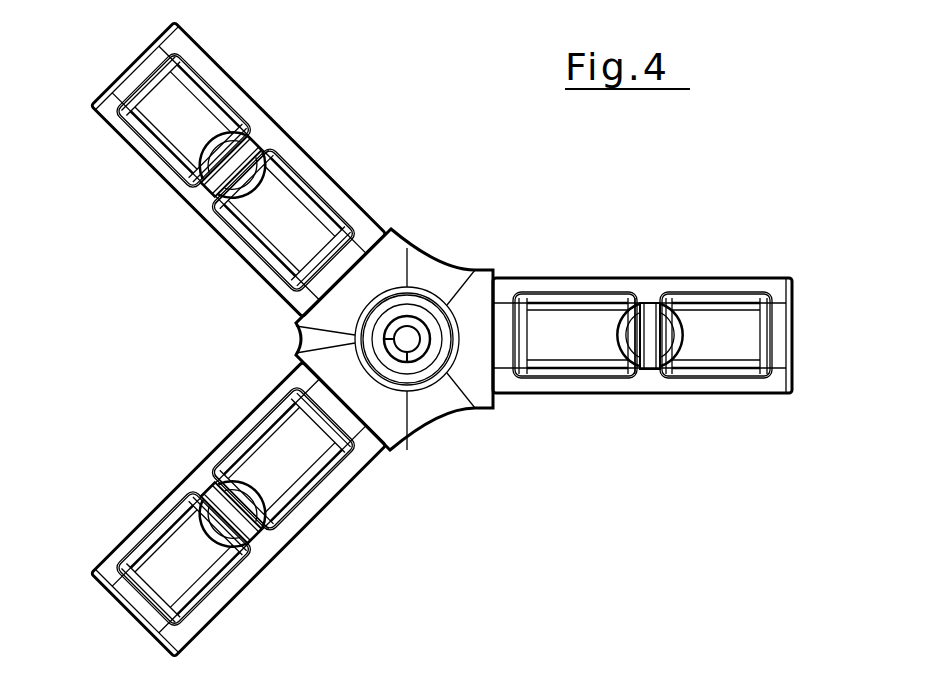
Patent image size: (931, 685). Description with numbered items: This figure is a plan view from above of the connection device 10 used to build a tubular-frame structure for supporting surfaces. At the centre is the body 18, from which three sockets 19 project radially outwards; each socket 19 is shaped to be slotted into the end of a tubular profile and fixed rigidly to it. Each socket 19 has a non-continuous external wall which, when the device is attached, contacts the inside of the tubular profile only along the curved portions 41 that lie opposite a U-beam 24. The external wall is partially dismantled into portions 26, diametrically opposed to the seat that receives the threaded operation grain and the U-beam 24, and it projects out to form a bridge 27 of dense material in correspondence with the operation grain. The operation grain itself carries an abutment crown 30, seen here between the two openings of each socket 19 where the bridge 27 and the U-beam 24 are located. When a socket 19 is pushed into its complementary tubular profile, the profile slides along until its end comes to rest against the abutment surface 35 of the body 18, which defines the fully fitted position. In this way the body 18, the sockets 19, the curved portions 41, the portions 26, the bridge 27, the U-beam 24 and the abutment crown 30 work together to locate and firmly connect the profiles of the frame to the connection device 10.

The connection device 10 is at (446, 152).
The body 18 is at (428, 398).
The socket 19 is at (141, 163).
The U-beam 24 is at (297, 240).
The portions 26 is at (225, 97).
The bridge 27 is at (243, 158).
The abutment crown 30 is at (243, 217).
The abutment surface 35 is at (381, 228).
The curved portions 41 is at (293, 157).